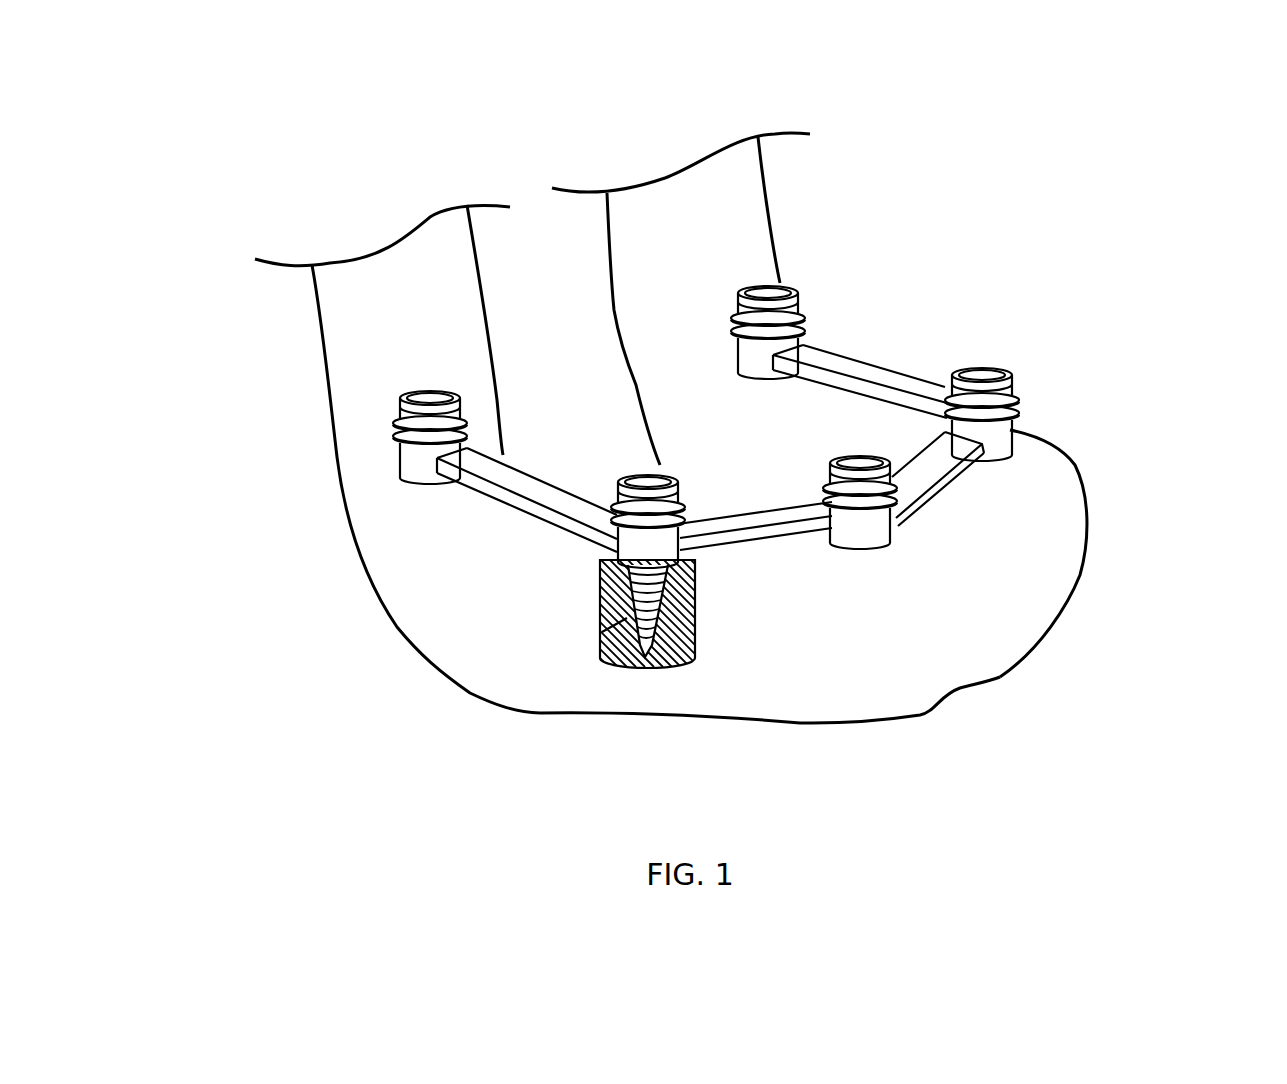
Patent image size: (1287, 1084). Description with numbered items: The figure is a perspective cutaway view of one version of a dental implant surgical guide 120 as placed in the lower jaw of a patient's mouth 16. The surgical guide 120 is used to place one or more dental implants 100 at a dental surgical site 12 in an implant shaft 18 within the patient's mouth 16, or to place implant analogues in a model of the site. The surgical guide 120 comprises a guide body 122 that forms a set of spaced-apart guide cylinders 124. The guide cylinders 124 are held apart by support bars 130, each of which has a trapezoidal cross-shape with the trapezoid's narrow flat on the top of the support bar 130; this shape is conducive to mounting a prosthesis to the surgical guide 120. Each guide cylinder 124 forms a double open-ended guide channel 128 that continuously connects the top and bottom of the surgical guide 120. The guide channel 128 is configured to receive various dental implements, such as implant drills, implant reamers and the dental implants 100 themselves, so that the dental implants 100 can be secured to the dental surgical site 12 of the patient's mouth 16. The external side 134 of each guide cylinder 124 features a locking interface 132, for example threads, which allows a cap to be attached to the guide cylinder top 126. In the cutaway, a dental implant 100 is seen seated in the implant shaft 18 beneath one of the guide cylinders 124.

The dental surgical site 12 is at (1112, 395).
The patient's mouth 16 is at (1010, 745).
The implant shaft 18 is at (600, 627).
The dental implant 100 is at (646, 648).
The dental implant surgical guide 120 is at (704, 452).
The guide body 122 is at (420, 470).
The guide cylinder 124 is at (404, 462).
The guide cylinder top 126 is at (400, 397).
The guide channel 128 is at (704, 452).
The support bar 130 is at (692, 509).
The locking interface 132 is at (400, 424).
The external side 134 is at (398, 375).